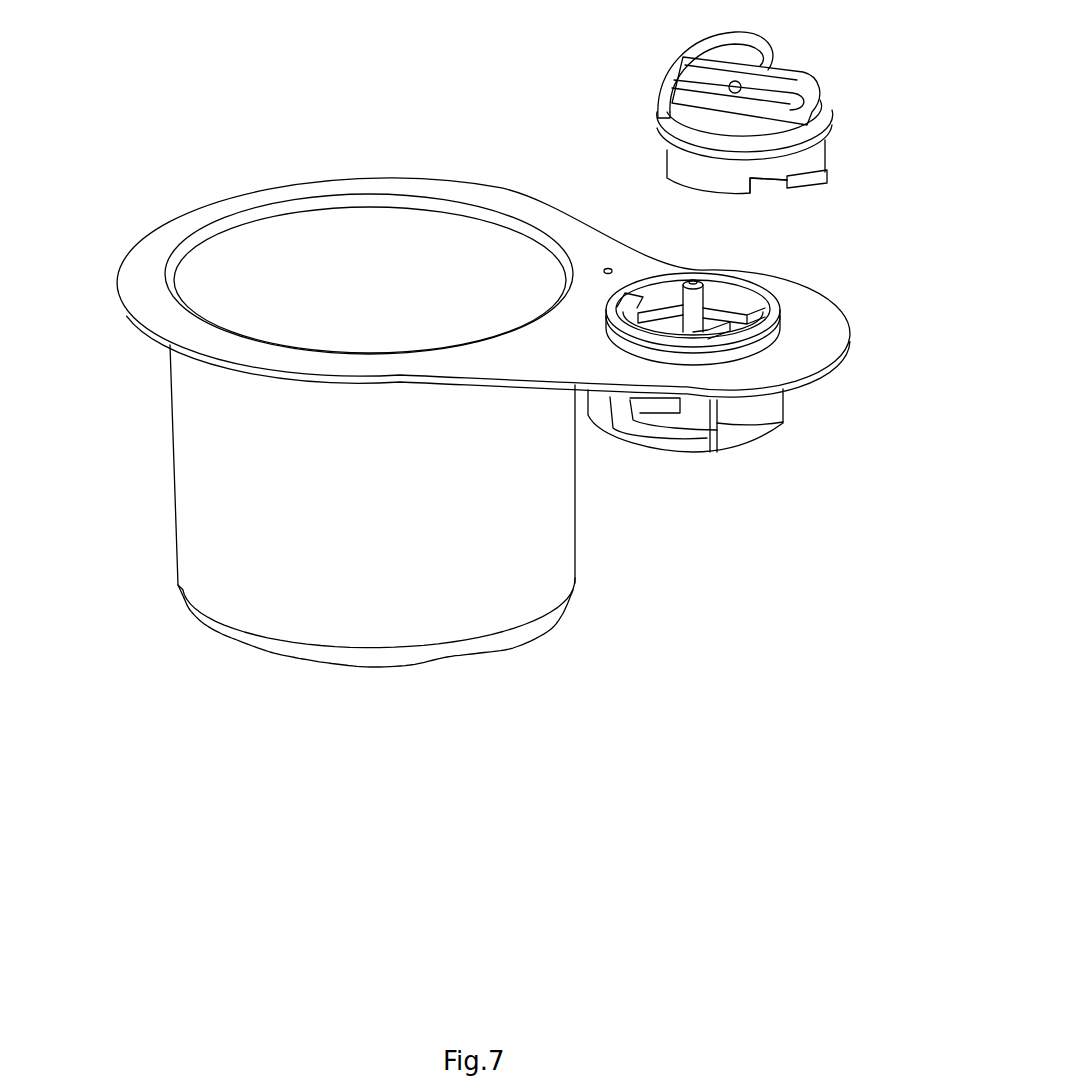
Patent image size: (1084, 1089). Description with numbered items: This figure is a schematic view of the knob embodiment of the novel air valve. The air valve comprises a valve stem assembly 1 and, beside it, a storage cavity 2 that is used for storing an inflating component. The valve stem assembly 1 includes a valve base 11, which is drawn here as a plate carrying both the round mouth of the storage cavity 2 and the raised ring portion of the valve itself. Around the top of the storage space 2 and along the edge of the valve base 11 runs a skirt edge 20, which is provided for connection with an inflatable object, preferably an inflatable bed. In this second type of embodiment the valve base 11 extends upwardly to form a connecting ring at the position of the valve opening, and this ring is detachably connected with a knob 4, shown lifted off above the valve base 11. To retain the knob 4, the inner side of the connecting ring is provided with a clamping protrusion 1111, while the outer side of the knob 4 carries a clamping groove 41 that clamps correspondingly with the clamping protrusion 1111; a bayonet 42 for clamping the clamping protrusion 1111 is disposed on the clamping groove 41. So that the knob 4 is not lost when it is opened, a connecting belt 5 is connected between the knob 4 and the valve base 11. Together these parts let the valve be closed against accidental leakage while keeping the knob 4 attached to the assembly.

The valve stem assembly 1 is at (807, 463).
The storage cavity 2 is at (330, 250).
The knob 4 is at (780, 147).
The connecting belt 5 is at (662, 70).
The valve base 11 is at (810, 348).
The skirt edge 20 is at (533, 208).
The clamping groove 41 is at (800, 180).
The bayonet 42 is at (767, 187).
The clamping protrusion 1111 is at (635, 302).